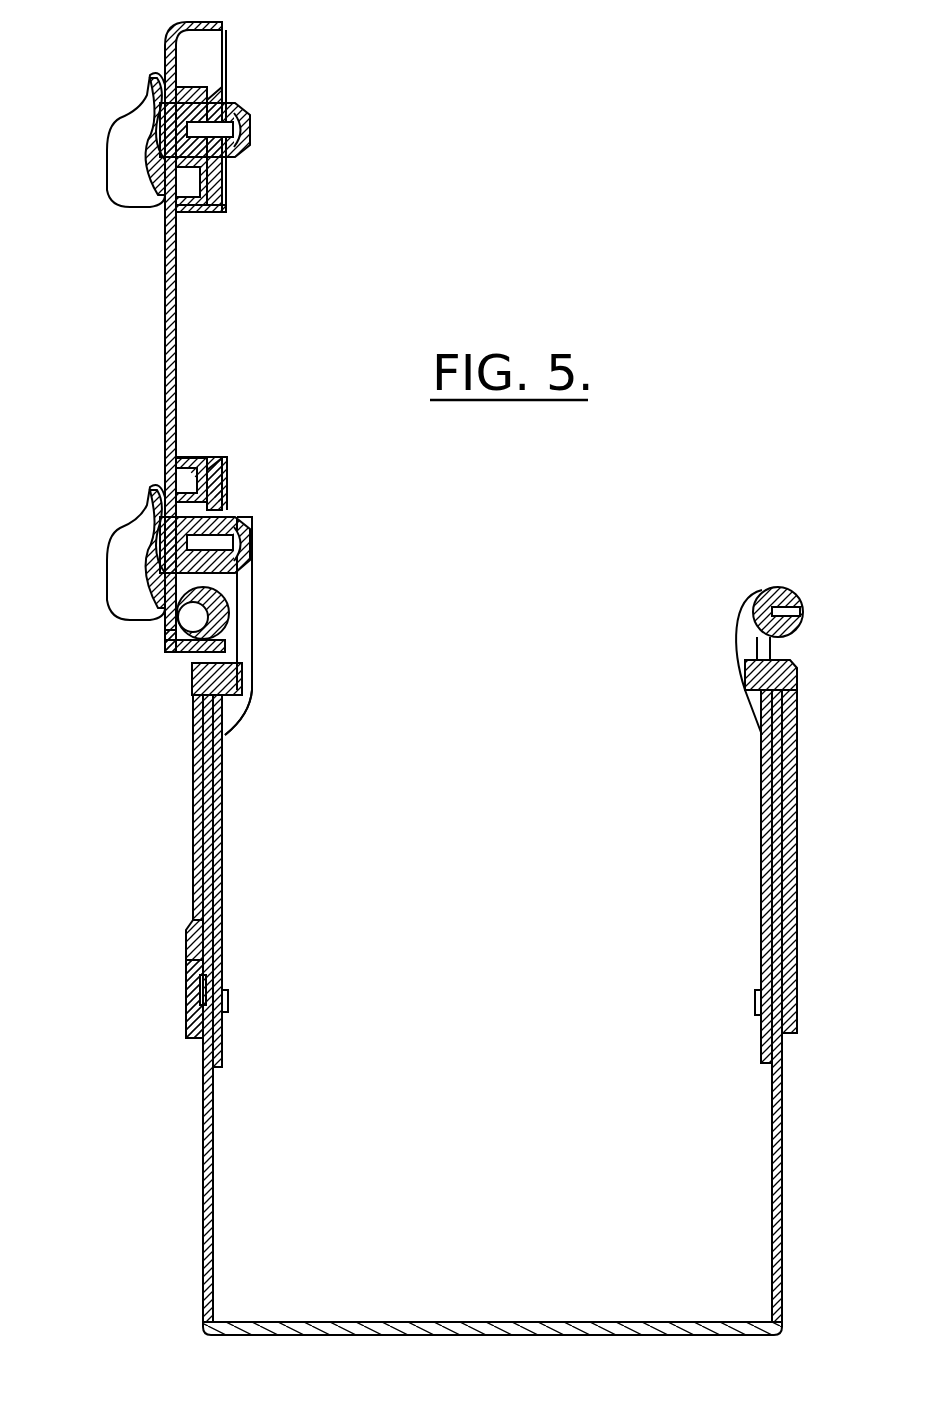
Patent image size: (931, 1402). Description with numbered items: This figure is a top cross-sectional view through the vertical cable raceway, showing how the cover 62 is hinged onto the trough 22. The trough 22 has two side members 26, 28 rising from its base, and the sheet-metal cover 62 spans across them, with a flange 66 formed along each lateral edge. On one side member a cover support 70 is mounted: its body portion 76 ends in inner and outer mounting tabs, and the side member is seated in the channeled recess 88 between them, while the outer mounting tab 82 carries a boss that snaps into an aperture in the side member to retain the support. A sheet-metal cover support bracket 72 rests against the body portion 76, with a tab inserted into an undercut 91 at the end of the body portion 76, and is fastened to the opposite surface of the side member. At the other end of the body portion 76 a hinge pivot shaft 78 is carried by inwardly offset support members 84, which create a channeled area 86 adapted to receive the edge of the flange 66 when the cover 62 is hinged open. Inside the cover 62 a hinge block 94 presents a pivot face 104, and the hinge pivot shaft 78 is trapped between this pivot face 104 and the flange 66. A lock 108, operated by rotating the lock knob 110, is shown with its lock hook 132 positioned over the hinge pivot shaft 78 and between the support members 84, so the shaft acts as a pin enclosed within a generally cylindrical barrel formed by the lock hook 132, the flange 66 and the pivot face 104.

The trough 22 is at (455, 1320).
The side member 26 is at (775, 1185).
The side member 28 is at (212, 1105).
The cover 62 is at (170, 305).
The flange 66 is at (195, 650).
The cover support 70 is at (195, 882).
The cover support bracket 72 is at (215, 815).
The body portion 76 is at (195, 820).
The hinge pivot shaft 78 is at (225, 633).
The outer mounting tab 82 is at (196, 1040).
The support member 84 is at (242, 658).
The channeled area 86 is at (228, 678).
The channeled recess 88 is at (205, 985).
The undercut 91 is at (232, 692).
The hinge block 94 is at (205, 462).
The pivot face 104 is at (185, 647).
The lock 108 is at (248, 572).
The lock knob 110 is at (125, 572).
The lock hook 132 is at (232, 600).